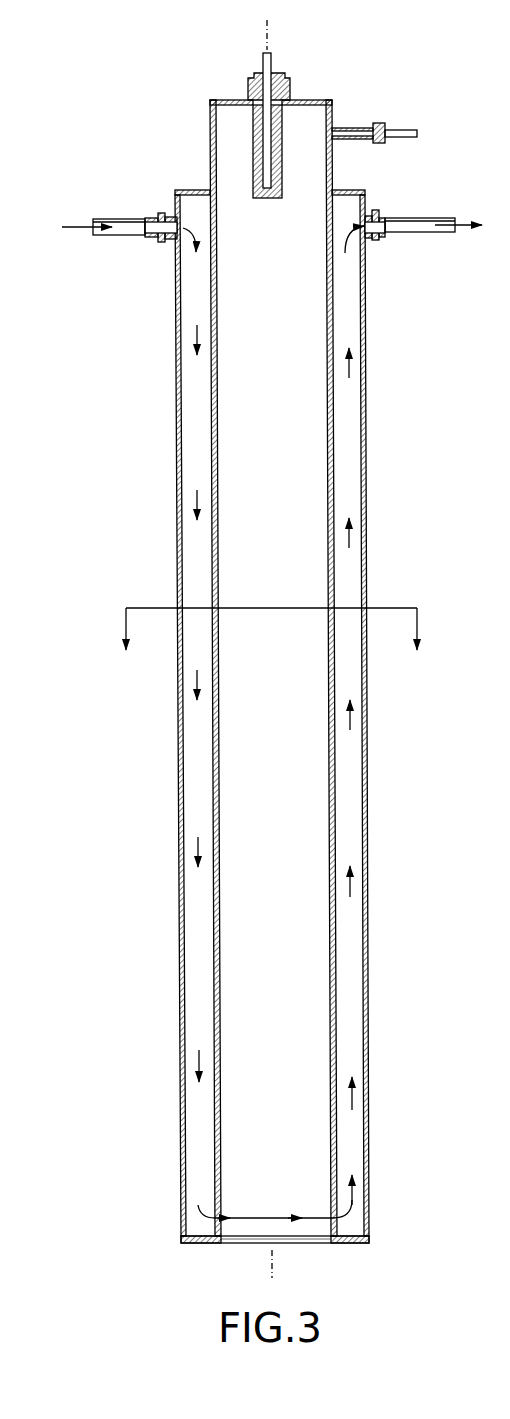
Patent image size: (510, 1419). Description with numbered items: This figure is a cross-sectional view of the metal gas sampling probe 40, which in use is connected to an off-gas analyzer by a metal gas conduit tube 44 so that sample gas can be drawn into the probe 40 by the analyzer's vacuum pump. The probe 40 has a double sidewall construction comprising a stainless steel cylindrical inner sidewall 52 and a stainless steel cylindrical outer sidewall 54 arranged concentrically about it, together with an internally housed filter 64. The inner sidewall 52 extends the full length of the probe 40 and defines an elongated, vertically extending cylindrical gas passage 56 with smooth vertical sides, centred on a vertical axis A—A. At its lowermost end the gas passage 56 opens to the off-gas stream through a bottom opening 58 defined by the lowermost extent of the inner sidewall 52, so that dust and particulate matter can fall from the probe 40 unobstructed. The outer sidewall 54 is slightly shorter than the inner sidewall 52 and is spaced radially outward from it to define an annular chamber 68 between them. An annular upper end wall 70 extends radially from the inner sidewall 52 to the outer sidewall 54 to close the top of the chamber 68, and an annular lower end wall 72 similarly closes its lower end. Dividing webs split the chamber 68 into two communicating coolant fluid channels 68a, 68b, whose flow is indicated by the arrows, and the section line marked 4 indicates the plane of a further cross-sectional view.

The gas sampling probe 40 is at (138, 484).
The gas conduit tube 44 is at (272, 62).
The inner sidewall 52 is at (336, 948).
The outer sidewall 54 is at (369, 1008).
The gas passage 56 is at (290, 1065).
The bottom opening 58 is at (290, 1244).
The filter 64 is at (281, 176).
The annular chamber 68 is at (340, 777).
The coolant fluid channel 68a is at (200, 748).
The coolant fluid channel 68b is at (352, 758).
The upper end wall 70 is at (186, 190).
The lower end wall 72 is at (200, 1244).
The section line 4- 4 is at (271, 649).